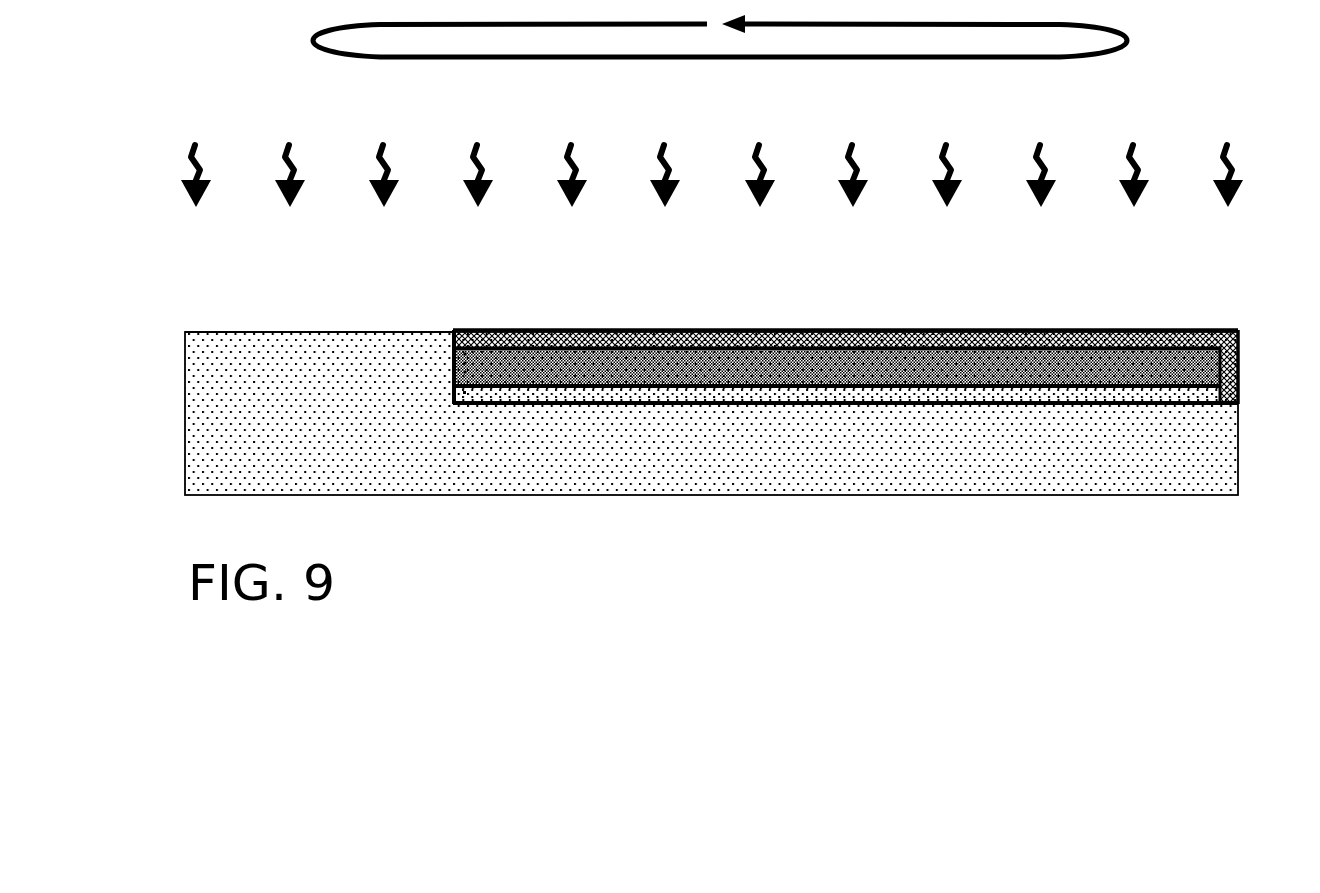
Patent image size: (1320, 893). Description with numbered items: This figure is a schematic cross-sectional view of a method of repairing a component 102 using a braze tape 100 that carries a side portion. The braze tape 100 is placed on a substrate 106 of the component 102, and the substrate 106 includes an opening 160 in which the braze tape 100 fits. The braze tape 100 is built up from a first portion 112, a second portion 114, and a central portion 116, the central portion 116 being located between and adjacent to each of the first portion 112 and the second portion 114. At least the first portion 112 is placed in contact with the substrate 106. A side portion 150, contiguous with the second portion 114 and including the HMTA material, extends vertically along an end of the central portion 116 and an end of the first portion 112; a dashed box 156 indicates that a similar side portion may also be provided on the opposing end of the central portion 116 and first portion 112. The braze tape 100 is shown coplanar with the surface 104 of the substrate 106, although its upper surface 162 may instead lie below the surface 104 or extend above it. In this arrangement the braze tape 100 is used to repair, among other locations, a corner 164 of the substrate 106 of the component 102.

The braze tape 100 is at (701, 328).
The component 102 is at (178, 326).
The surface of substrate 104 is at (305, 332).
The substrate 106 is at (236, 332).
The first portion 112 is at (618, 390).
The second portion 114 is at (690, 347).
The central portion 116 is at (783, 375).
The side portion 150 is at (1228, 373).
The dashed box 156 is at (452, 370).
The opening 160 is at (452, 380).
The upper surface of braze tape 162 is at (868, 332).
The corner of substrate 164 is at (1248, 325).